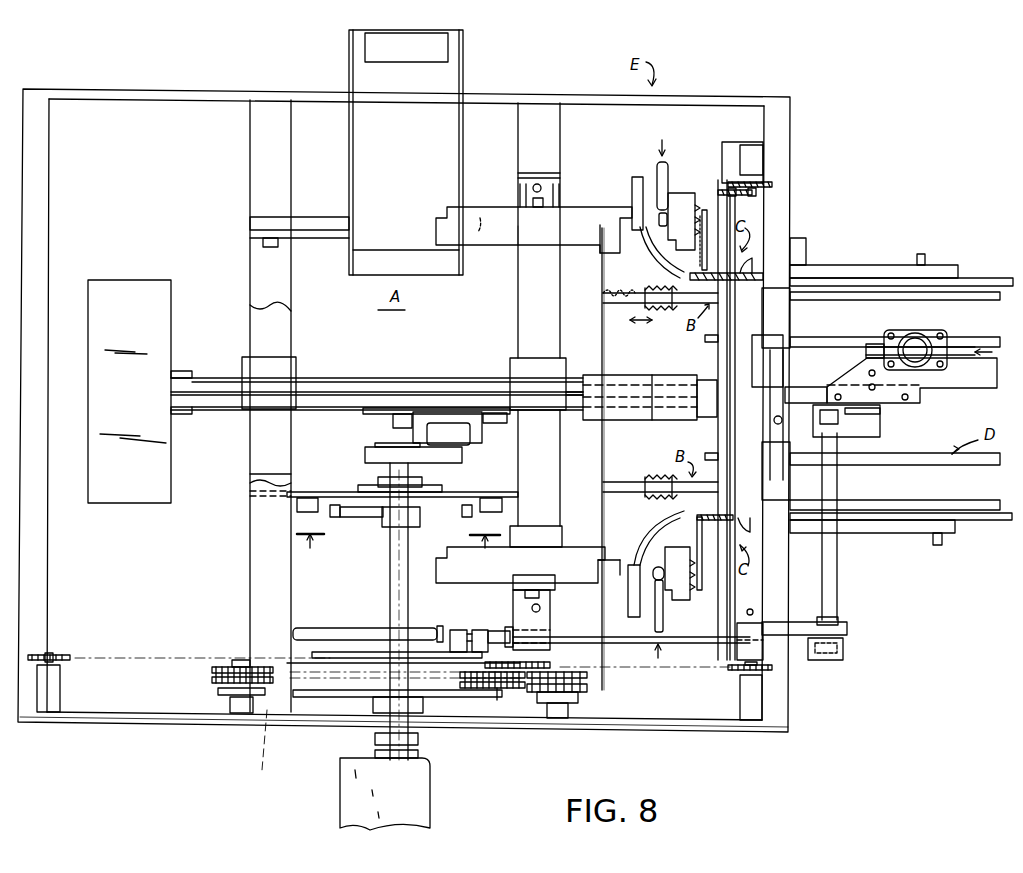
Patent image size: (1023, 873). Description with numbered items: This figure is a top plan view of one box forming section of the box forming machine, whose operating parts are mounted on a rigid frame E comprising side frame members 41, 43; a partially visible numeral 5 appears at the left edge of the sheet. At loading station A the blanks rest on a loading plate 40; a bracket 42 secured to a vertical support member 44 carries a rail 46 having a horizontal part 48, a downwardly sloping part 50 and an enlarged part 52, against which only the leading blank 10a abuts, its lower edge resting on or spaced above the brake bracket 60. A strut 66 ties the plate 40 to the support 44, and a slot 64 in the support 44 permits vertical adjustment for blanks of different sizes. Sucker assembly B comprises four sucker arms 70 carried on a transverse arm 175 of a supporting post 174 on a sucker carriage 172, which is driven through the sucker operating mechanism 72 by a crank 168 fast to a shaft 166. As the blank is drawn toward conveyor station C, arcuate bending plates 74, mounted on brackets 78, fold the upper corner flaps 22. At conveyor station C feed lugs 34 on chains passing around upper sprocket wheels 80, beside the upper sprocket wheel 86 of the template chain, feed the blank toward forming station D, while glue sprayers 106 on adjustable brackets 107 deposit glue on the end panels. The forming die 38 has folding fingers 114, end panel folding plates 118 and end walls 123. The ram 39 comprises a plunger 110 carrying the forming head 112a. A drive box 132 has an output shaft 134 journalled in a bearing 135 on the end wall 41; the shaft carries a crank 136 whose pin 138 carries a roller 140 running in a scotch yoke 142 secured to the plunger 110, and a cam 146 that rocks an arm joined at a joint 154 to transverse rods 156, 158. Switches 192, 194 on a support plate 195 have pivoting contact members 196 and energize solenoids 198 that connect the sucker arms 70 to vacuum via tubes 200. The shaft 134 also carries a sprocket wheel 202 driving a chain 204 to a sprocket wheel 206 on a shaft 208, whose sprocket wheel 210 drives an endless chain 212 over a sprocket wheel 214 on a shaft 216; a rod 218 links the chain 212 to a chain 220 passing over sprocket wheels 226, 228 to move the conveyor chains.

The machine 5 is at (5, 367).
The leading blank 10a is at (608, 348).
The upper corner flaps 22 is at (398, 553).
The feed lugs 34 is at (700, 270).
The forming die 38 is at (905, 535).
The double ended plunger or ram 39 is at (362, 372).
The loading plate 40 is at (349, 213).
The side frame member 41 is at (700, 738).
The bracket 42 is at (462, 285).
The side frame member 43 is at (238, 97).
The vertical support member 44 is at (552, 212).
The rail 46 is at (496, 245).
The horizontal part 48 is at (462, 218).
The downwardly sloping part 50 is at (565, 245).
The enlarged part 52 is at (606, 240).
The brake bracket 60 is at (638, 378).
The slot 64 is at (548, 206).
The strut 66 is at (306, 232).
The sucker arms 70 is at (660, 308).
The sucker operating mechanism 72 is at (945, 330).
The upper arcuate bending plates 74 is at (642, 272).
The brackets 78 is at (608, 184).
The upper sprocket wheels 80 is at (760, 300).
The upper sprocket wheel 86 is at (750, 198).
The glue sprayers 106 is at (680, 195).
The horizontally adjustable brackets 107 is at (636, 292).
The plunger 110 is at (570, 380).
The forming head 112a is at (130, 292).
The folding fingers 114 is at (712, 343).
The end panel folding plates 118 is at (748, 258).
The end walls 123 is at (975, 280).
The gear or drive box 132 is at (420, 806).
The output shaft 134 is at (392, 582).
The bearing 135 is at (420, 742).
The crank 136 is at (440, 464).
The pin 138 is at (470, 455).
The roller 140 is at (466, 410).
The scotch yoke 142 is at (425, 400).
The cam 146 is at (320, 655).
The joint 154 is at (455, 630).
The transverse rod 156 is at (605, 640).
The transverse rod 158 is at (343, 630).
The shaft 166 is at (837, 606).
The crank 168 is at (855, 435).
The sucker carriage 172 is at (932, 399).
The supporting post 174 is at (802, 387).
The transverse arm 175 is at (770, 395).
The switch 192 is at (483, 512).
The switch 194 is at (300, 498).
The support plate 195 is at (320, 492).
The pivoting contact members 196 is at (336, 518).
The solenoids 198 is at (374, 530).
The tubes 200 is at (868, 300).
The sprocket wheel 202 is at (305, 700).
The chain 204 is at (279, 746).
The sprocket wheel 206 is at (225, 700).
The shaft 208 is at (250, 715).
The sprocket wheel 210 is at (235, 648).
The endless chain 212 is at (497, 700).
The sprocket wheel 214 is at (587, 688).
The shaft 216 is at (562, 718).
The rod 218 is at (498, 690).
The chain 220 is at (548, 668).
The sprocket wheel 226 is at (68, 655).
The sprocket wheel 228 is at (770, 678).